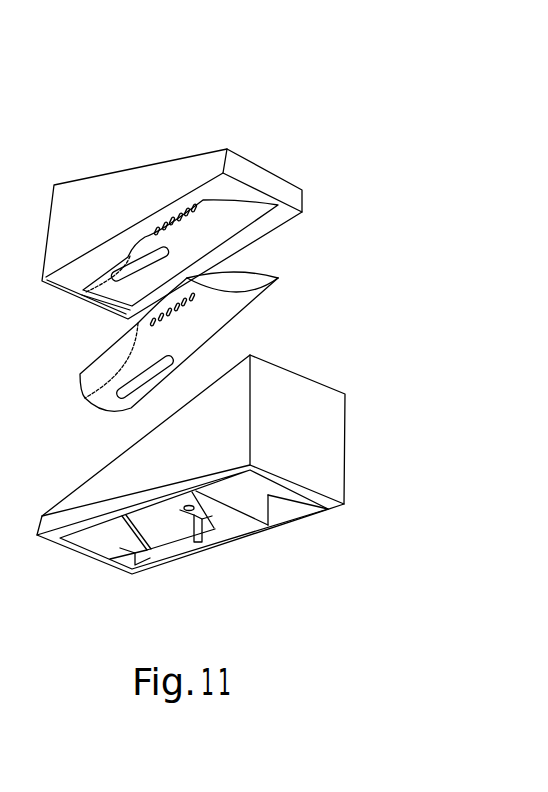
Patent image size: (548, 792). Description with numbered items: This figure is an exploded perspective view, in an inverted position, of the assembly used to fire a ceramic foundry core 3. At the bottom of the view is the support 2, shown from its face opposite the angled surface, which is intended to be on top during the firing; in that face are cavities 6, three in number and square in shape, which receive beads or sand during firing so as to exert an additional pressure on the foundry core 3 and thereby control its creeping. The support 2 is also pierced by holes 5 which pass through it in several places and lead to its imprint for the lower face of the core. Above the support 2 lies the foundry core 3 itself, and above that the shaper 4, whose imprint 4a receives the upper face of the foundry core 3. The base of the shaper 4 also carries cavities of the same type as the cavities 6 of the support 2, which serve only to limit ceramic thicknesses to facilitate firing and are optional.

The support 2 is at (327, 402).
The foundry core 3 is at (243, 305).
The shaper 4 is at (137, 182).
The imprint 4a is at (245, 222).
The holes 5 is at (145, 533).
The cavities 6 is at (117, 535).